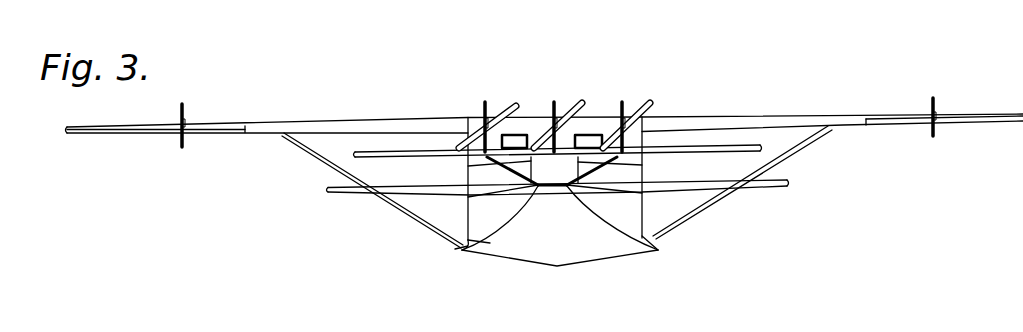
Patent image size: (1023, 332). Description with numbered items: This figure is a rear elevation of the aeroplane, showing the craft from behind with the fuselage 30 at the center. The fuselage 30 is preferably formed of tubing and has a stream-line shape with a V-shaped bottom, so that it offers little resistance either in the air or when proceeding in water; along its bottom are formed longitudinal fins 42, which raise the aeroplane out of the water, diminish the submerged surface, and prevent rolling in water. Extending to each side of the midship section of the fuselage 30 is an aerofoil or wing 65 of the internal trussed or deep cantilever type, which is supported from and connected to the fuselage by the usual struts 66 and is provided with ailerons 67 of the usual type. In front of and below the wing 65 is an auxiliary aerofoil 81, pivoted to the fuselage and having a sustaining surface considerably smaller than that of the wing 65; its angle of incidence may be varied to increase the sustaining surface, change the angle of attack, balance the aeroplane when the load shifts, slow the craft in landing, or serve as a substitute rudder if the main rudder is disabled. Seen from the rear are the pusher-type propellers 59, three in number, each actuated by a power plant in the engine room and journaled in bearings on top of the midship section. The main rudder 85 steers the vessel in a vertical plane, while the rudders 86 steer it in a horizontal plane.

The fuselage 30 is at (560, 191).
The longitudinal fins 42 is at (457, 247).
The propeller 59 is at (510, 105).
The aerofoil or wing 65 is at (746, 116).
The struts 66 is at (822, 134).
The ailerons 67 is at (997, 124).
The auxiliary aerofoil 81 is at (787, 183).
The main rudder 85 is at (710, 155).
The rudders 86 is at (623, 104).